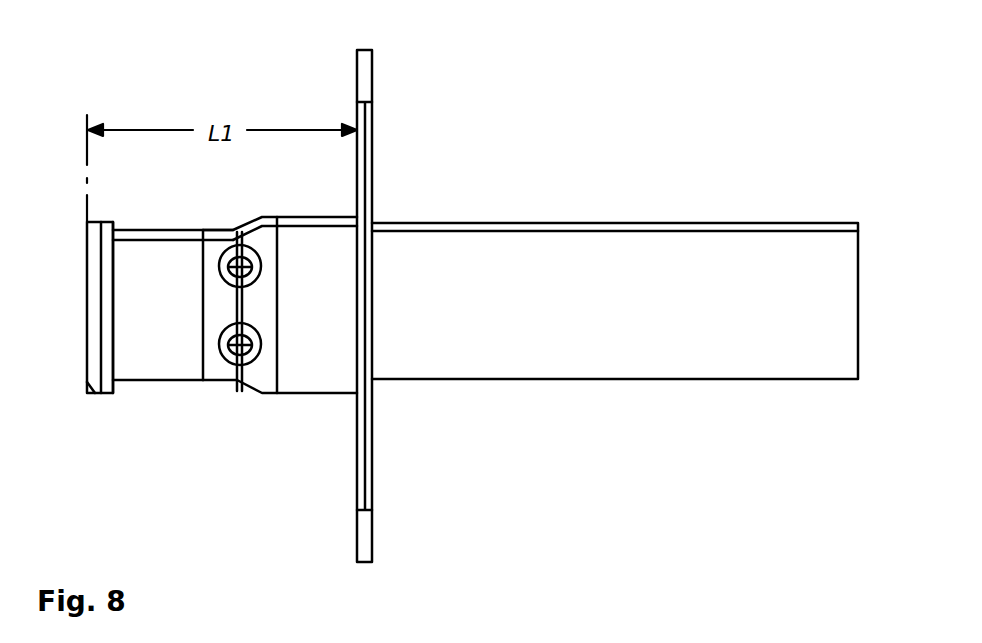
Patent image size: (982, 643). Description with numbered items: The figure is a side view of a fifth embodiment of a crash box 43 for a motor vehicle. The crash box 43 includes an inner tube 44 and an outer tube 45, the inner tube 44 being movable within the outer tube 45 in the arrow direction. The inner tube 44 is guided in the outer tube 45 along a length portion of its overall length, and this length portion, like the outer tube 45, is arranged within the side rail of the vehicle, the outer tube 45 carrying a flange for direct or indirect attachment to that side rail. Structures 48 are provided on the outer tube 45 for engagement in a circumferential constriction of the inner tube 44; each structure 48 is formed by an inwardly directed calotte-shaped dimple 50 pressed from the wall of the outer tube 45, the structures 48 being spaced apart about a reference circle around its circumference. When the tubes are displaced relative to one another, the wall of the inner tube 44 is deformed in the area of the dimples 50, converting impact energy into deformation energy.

The crash box 43 is at (568, 140).
The inner tube 44 is at (641, 223).
The outer tube 45 is at (283, 412).
The structure 48 is at (237, 395).
The calotte-shaped dimple 50 is at (223, 357).